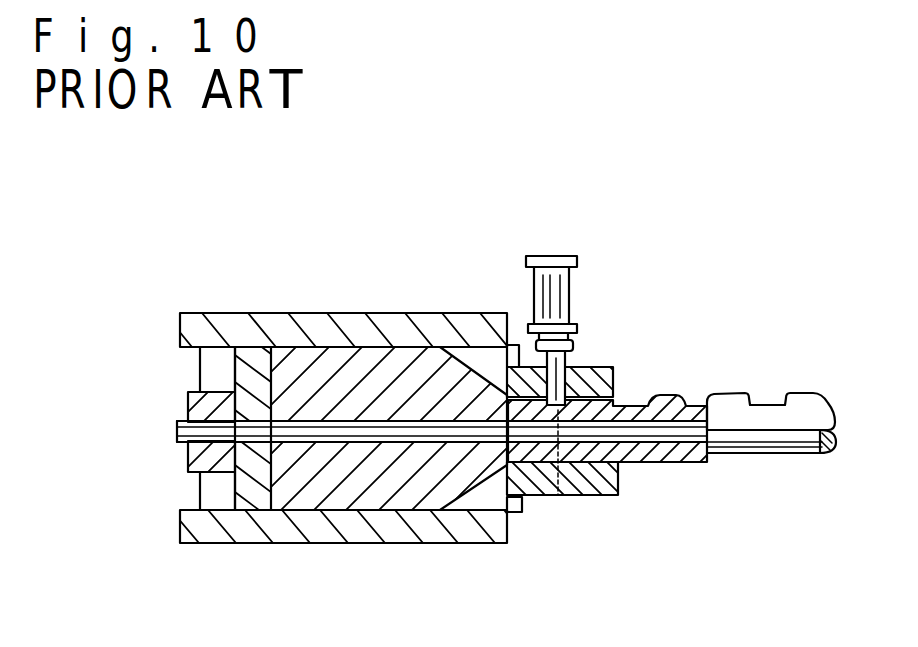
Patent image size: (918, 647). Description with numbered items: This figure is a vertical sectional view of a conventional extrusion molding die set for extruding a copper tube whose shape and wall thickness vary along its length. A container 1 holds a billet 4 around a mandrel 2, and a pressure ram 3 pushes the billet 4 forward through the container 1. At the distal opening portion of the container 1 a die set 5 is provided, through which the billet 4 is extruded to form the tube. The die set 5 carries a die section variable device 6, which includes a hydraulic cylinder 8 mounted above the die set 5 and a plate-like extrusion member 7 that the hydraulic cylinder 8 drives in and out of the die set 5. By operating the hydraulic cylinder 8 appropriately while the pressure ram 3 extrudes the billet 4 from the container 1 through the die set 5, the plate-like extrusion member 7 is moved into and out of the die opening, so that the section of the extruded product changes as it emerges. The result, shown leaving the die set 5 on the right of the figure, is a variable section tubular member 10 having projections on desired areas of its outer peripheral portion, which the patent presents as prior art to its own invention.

The container 1 is at (363, 538).
The mandrel 2 is at (178, 433).
The pressure ram 3 is at (250, 358).
The billet 4 is at (402, 362).
The die set 5 is at (602, 494).
The die section variable device 6 is at (583, 343).
The plate-like extrusion member 7 is at (613, 380).
The hydraulic cylinder 8 is at (567, 278).
The variable section tubular member 10 is at (785, 457).